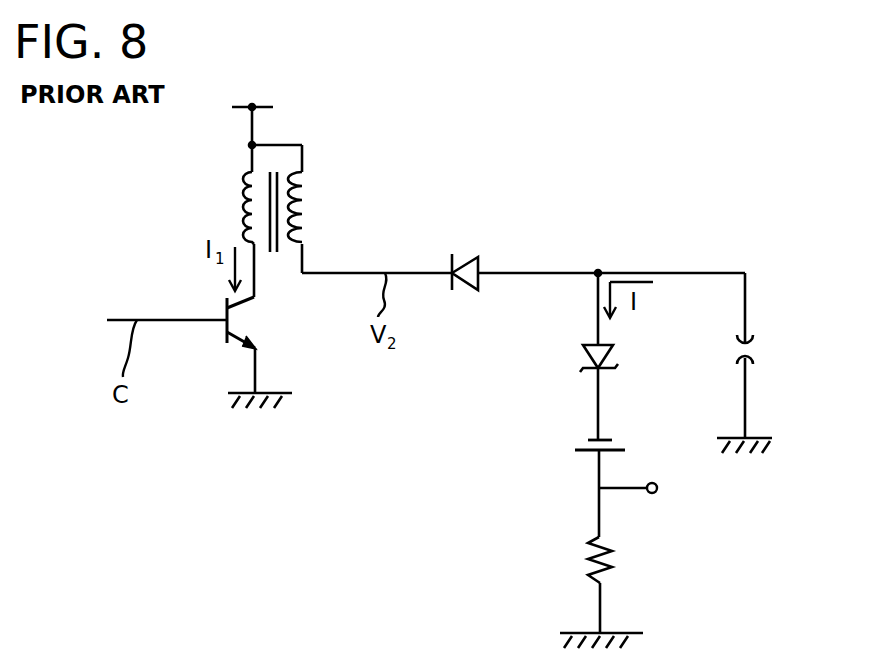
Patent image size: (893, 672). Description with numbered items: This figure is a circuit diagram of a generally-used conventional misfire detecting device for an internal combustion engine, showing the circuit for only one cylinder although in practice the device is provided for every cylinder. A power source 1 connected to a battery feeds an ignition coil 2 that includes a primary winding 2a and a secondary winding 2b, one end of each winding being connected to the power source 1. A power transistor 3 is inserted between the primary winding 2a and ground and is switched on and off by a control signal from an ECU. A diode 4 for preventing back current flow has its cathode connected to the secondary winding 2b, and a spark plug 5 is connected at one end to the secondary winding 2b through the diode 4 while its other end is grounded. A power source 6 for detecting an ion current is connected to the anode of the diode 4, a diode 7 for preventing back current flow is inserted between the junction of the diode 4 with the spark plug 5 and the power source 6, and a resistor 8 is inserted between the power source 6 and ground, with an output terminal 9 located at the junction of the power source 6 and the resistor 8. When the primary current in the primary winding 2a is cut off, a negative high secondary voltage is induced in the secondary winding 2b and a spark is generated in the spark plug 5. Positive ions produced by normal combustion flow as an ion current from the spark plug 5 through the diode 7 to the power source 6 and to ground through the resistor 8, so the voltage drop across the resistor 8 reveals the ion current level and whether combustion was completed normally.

The power source 1 is at (253, 105).
The ignition coil 2 is at (271, 169).
The primary winding 2a is at (245, 210).
The secondary winding 2b is at (308, 200).
The power transistor 3 is at (248, 322).
The diode 4 is at (460, 252).
The spark plug 5 is at (753, 355).
The power source 6 is at (577, 442).
The diode 7 is at (608, 358).
The resistor 8 is at (612, 563).
The output terminal 9 is at (653, 482).